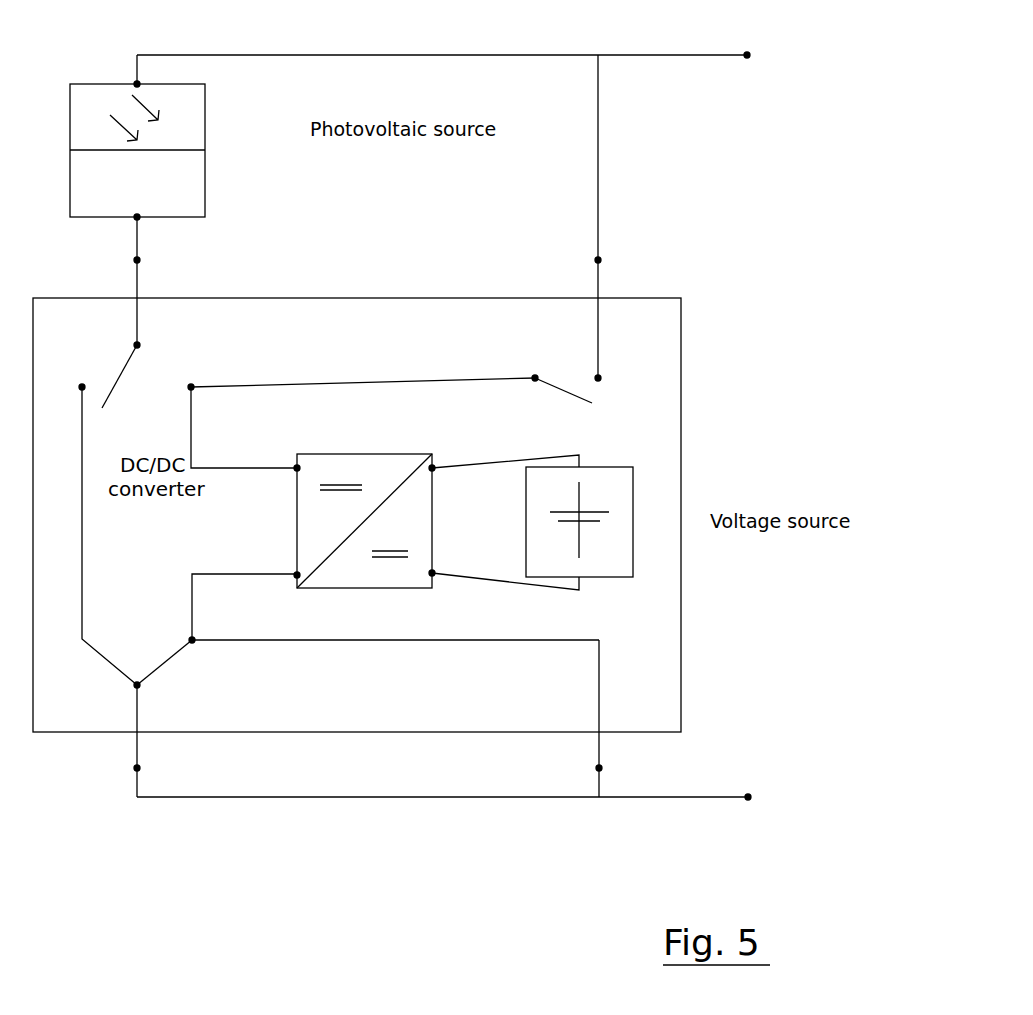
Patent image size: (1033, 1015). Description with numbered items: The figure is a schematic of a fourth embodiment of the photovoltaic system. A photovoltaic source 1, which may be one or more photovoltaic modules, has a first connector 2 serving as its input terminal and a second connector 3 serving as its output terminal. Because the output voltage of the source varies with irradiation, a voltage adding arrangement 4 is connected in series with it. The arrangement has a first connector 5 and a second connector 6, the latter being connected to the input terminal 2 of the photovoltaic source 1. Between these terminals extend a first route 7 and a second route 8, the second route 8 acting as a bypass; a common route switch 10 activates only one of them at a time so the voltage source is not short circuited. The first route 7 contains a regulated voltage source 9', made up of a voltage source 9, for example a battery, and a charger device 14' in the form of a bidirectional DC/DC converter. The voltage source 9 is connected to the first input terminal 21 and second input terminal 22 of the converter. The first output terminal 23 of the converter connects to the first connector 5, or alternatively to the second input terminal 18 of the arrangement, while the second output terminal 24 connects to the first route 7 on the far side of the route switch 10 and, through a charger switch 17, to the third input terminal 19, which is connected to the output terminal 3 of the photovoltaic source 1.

The photovoltaic source 1 is at (190, 130).
The first connector 2 is at (137, 217).
The second connector 3 is at (137, 84).
The voltage adding arrangement 4 is at (333, 322).
The first connector 5 is at (137, 768).
The second connector 6 is at (140, 260).
The first route 7 is at (195, 622).
The second route 8 is at (84, 610).
The voltage source 9 is at (627, 522).
The regulated voltage source 9' is at (679, 422).
The common route switch 10 is at (127, 367).
The charger device 14' is at (321, 521).
The charger switch 17 is at (575, 396).
The second input terminal 18 is at (602, 768).
The third input terminal 19 is at (601, 260).
The first input terminal 21 is at (432, 573).
The second input terminal 22 is at (432, 468).
The first output terminal 23 is at (297, 575).
The second output terminal 24 is at (297, 468).